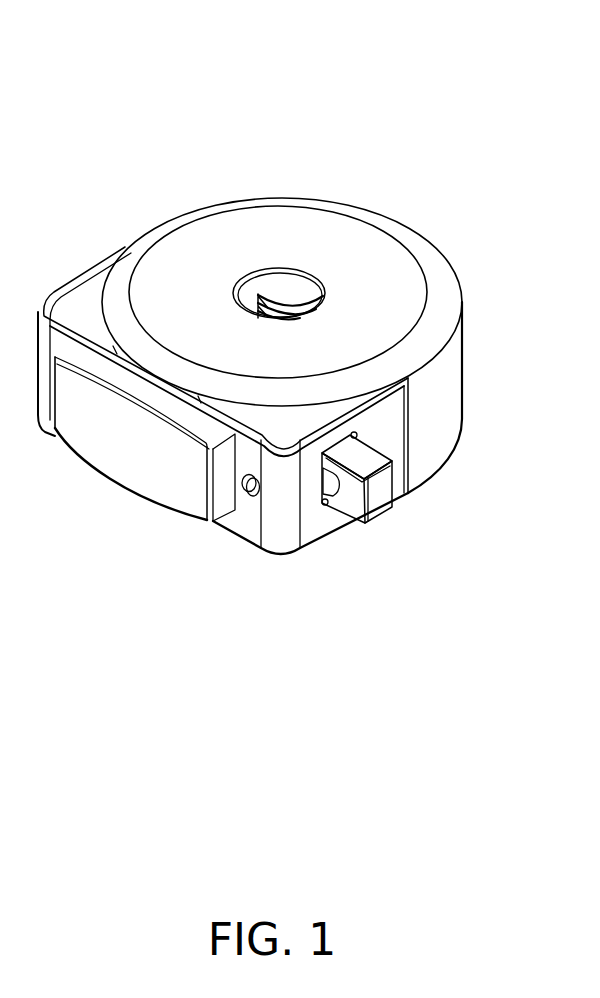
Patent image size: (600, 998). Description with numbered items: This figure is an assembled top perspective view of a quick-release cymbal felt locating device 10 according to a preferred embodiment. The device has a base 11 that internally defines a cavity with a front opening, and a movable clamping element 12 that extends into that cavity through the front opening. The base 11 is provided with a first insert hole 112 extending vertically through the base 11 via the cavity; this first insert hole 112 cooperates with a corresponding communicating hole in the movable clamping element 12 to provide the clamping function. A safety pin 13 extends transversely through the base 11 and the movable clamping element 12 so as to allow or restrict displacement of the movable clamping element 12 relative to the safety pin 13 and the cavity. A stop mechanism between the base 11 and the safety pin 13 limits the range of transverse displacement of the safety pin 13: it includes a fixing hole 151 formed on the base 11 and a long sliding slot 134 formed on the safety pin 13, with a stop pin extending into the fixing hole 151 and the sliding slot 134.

The quick-release cymbal felt locating device 10 is at (271, 33).
The base 11 is at (376, 213).
The first insert hole 112 is at (263, 270).
The movable clamping element 12 is at (157, 505).
The safety pin 13 is at (373, 540).
The sliding slot 134 is at (330, 500).
The fixing hole 151 is at (253, 497).